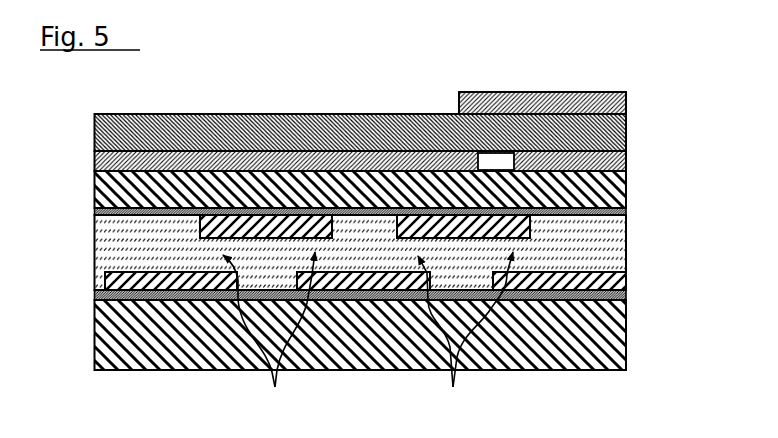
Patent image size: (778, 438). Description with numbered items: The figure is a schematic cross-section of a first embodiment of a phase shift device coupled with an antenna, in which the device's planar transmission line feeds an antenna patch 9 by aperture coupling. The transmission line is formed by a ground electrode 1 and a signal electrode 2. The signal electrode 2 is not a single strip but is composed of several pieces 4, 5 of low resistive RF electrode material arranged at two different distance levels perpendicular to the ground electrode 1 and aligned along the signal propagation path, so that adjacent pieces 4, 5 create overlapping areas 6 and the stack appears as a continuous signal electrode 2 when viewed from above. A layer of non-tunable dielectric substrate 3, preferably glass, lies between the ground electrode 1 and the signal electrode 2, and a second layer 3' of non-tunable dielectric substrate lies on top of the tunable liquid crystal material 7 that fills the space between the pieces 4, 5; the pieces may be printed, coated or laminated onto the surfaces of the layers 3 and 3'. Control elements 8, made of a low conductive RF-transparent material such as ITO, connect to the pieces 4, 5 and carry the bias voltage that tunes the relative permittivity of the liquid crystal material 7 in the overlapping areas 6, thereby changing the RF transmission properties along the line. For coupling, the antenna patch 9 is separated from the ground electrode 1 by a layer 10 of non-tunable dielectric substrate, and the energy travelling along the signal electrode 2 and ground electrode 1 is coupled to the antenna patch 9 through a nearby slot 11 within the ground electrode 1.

The ground electrode 1 is at (597, 160).
The signal electrode 2 is at (541, 226).
The non-tunable dielectric substrate 3 is at (394, 208).
The second layer of non-tunable dielectric substrate 3' is at (397, 335).
The pieces of the signal electrode 4 is at (397, 218).
The pieces of the signal electrode 5 is at (196, 283).
The overlapping areas 6 is at (368, 337).
The tunable liquid crystal material 7 is at (150, 248).
The control elements 8 is at (137, 212).
The antenna patch 9 is at (626, 95).
The layer of non-tunable dielectric substrate 10 is at (592, 129).
The slot 11 is at (494, 158).